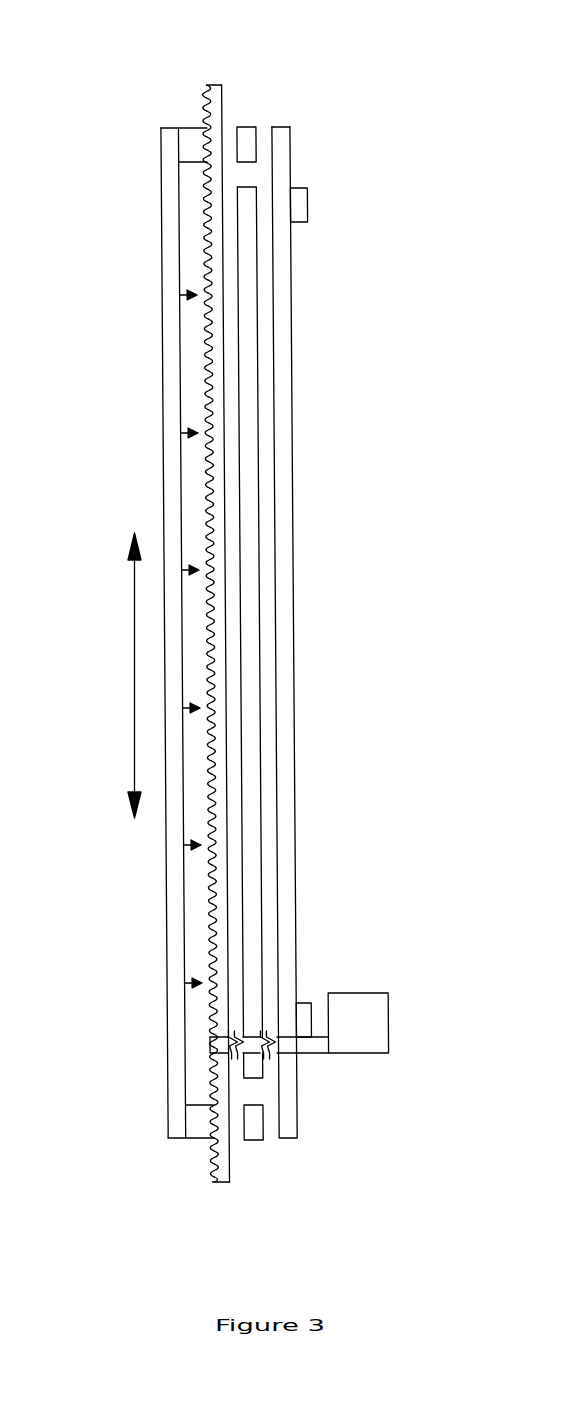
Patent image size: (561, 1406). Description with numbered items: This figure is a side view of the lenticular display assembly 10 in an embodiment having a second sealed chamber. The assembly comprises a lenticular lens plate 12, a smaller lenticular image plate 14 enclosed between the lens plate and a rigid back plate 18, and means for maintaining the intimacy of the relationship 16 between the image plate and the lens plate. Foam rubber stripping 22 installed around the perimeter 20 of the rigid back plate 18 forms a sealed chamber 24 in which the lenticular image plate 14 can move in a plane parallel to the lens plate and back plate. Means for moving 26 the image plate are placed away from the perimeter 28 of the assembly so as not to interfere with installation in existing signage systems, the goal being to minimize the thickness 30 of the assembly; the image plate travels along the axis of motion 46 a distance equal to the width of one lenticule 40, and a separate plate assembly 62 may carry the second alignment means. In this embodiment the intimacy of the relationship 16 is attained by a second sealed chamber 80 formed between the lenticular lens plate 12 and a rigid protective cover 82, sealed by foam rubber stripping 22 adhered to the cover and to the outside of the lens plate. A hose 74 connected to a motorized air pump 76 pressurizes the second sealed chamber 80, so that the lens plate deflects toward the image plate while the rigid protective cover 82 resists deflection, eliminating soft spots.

The lenticular display assembly 10 is at (285, 74).
The lenticular lens plate 12 is at (207, 180).
The lenticular image plate 14 is at (247, 262).
The means for maintaining the intimacy of the relationship 16 is at (230, 297).
The rigid back plate 18 is at (281, 177).
The perimeter of the rigid back plate 20 is at (281, 148).
The foam rubber stripping 22 is at (242, 142).
The sealed chamber 24 is at (253, 1096).
The means for moving 26 is at (307, 1004).
The perimeter of the lenticular display assembly 28 is at (210, 1182).
The thickness of the lenticular display assembly 30 is at (283, 1186).
The lenticule 40 is at (206, 489).
The axis of motion 46 is at (118, 675).
The separate plate assembly 62 is at (300, 203).
The hose 74 is at (312, 1045).
The motorized air pump 76 is at (372, 1035).
The second sealed chamber 80 is at (190, 340).
The rigid protective cover 82 is at (167, 393).